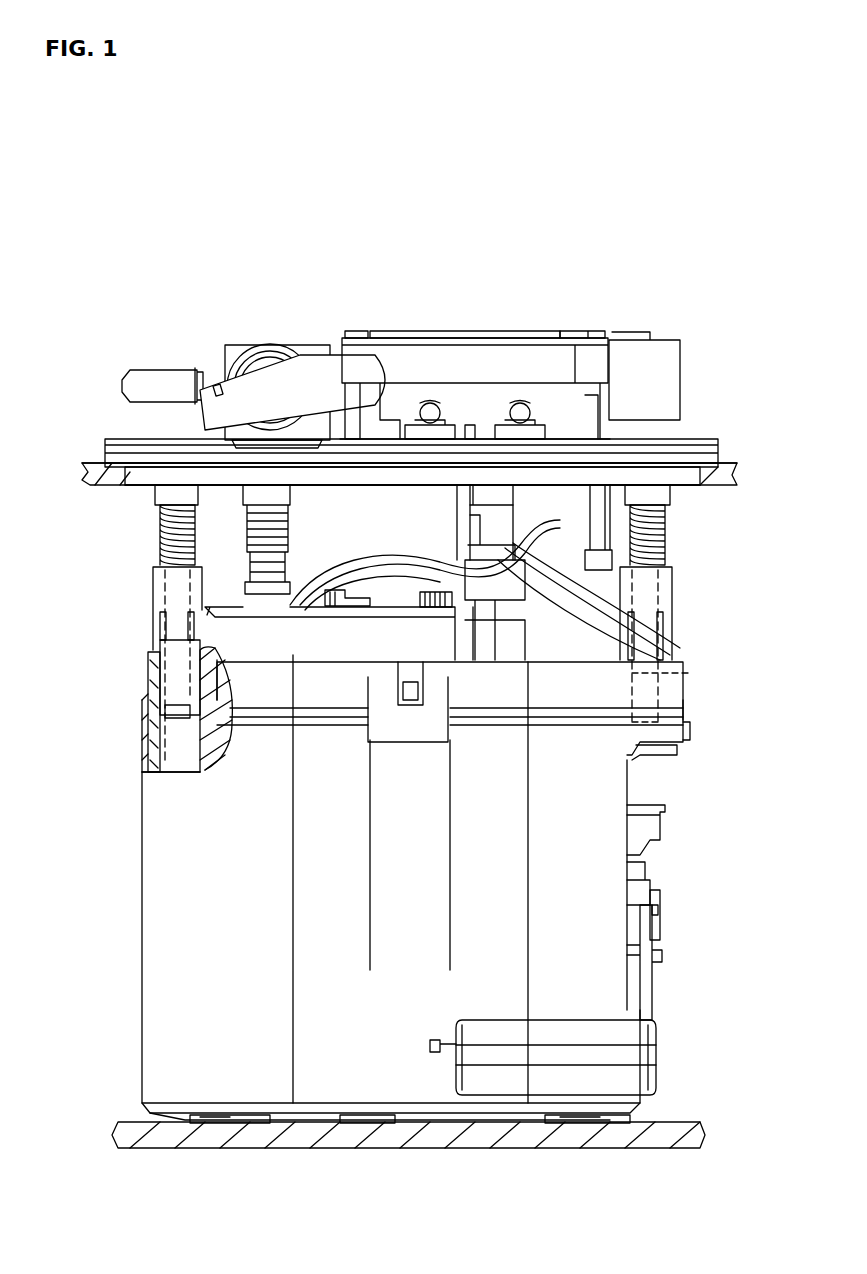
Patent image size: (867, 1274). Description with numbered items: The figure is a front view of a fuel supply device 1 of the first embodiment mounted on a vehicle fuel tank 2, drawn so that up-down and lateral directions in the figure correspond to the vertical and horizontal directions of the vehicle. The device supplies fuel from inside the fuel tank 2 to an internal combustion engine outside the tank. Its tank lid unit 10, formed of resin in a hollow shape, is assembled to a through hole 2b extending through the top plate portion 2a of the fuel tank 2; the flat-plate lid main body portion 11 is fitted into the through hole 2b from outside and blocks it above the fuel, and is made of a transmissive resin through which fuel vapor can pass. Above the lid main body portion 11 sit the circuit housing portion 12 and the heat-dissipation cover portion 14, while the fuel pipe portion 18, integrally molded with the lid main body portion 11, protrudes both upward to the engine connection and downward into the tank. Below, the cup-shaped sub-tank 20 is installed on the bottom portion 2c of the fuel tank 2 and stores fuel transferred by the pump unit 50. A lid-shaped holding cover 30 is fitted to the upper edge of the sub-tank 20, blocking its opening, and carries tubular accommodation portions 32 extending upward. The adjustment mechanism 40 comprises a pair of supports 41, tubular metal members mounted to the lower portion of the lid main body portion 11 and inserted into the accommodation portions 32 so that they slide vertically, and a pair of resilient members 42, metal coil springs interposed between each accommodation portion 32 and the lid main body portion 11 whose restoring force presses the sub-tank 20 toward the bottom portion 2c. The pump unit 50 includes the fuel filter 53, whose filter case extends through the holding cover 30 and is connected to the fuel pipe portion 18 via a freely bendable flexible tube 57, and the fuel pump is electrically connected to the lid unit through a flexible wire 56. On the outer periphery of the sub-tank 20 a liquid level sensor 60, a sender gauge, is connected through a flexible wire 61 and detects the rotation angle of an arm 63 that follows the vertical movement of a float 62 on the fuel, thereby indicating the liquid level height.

The fuel supply device 1 is at (104, 300).
The fuel tank 2 is at (720, 480).
The top plate portion 2a is at (95, 470).
The through hole 2b is at (140, 484).
The bottom portion 2c is at (693, 1125).
The tank lid unit 10 is at (621, 326).
The lid main body portion 11 is at (680, 452).
The circuit housing portion 12 is at (500, 380).
The heat-dissipation cover portion 14 is at (418, 336).
The fuel pipe portion 18 is at (176, 372).
The sub-tank 20 is at (627, 790).
The holding cover 30 is at (688, 682).
The accommodation portions 32 is at (150, 620).
The adjustment mechanism 40 is at (128, 658).
The support 41 is at (177, 685).
The resilient member 42 is at (157, 525).
The pump unit 50 is at (210, 603).
The fuel filter 53 is at (278, 650).
The flexible wire 56 is at (425, 592).
The flexible tube 57 is at (330, 485).
The liquid level sensor 60 is at (670, 905).
The flexible wire 61 is at (590, 596).
The float 62 is at (655, 1040).
The arm 63 is at (652, 990).